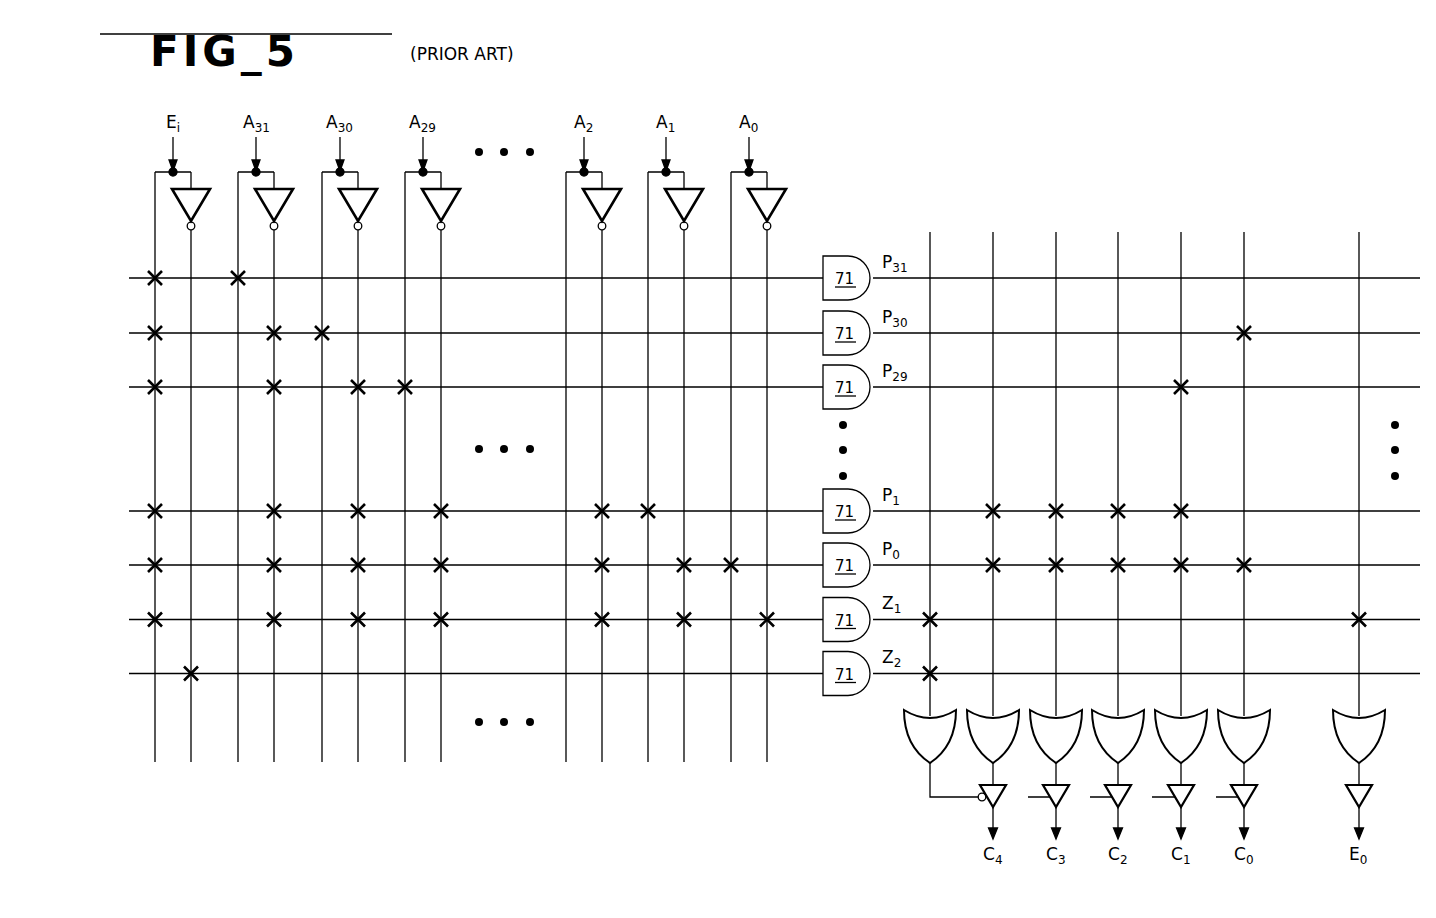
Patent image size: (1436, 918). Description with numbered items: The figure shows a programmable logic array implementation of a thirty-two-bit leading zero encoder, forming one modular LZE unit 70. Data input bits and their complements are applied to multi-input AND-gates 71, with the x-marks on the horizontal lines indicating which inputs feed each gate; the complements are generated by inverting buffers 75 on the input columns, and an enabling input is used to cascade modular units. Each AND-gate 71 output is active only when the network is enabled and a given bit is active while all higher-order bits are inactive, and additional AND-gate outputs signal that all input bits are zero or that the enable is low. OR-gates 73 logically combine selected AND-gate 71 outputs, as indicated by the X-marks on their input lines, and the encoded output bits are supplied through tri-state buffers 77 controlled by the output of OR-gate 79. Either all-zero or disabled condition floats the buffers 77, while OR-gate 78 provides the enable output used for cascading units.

The LZE unit 70 is at (960, 189).
The AND-gate 71 is at (846, 476).
The OR-gate 73 is at (1118, 736).
The inverting buffer 75 is at (453, 199).
The tri-state buffer 77 is at (1001, 793).
The OR-gate 78 is at (1369, 748).
The OR-gate 79 is at (940, 748).